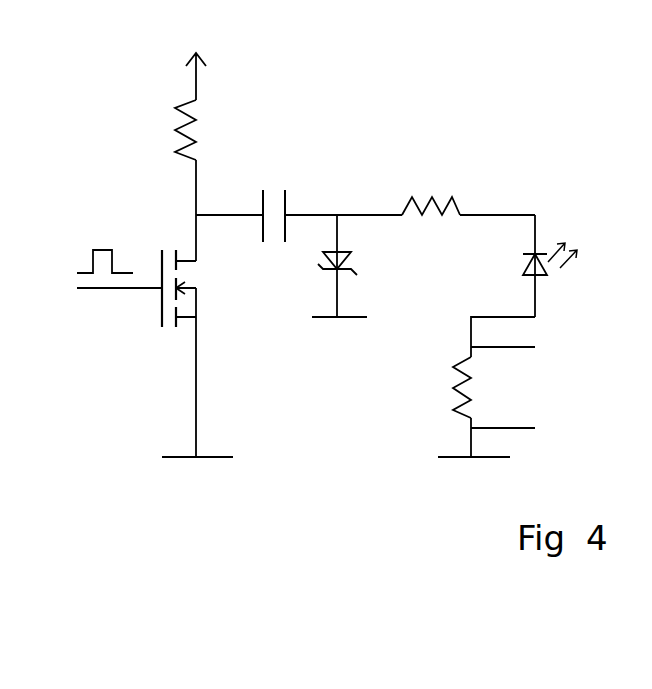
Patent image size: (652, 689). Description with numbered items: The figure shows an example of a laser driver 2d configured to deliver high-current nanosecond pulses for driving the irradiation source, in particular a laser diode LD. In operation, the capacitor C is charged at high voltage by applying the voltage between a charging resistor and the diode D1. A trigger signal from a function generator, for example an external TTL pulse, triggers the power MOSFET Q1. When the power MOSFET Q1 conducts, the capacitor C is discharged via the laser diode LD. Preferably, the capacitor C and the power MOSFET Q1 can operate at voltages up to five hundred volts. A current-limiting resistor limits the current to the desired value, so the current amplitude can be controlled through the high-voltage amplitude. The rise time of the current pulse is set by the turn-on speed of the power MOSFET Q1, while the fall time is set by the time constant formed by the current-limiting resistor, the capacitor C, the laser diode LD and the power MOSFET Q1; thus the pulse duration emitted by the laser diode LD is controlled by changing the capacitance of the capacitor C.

The laser driver 2d is at (517, 108).
The capacitor C is at (274, 204).
The power MOSFET Q1 is at (191, 353).
The diode D1 is at (349, 266).
The laser diode LD is at (550, 266).